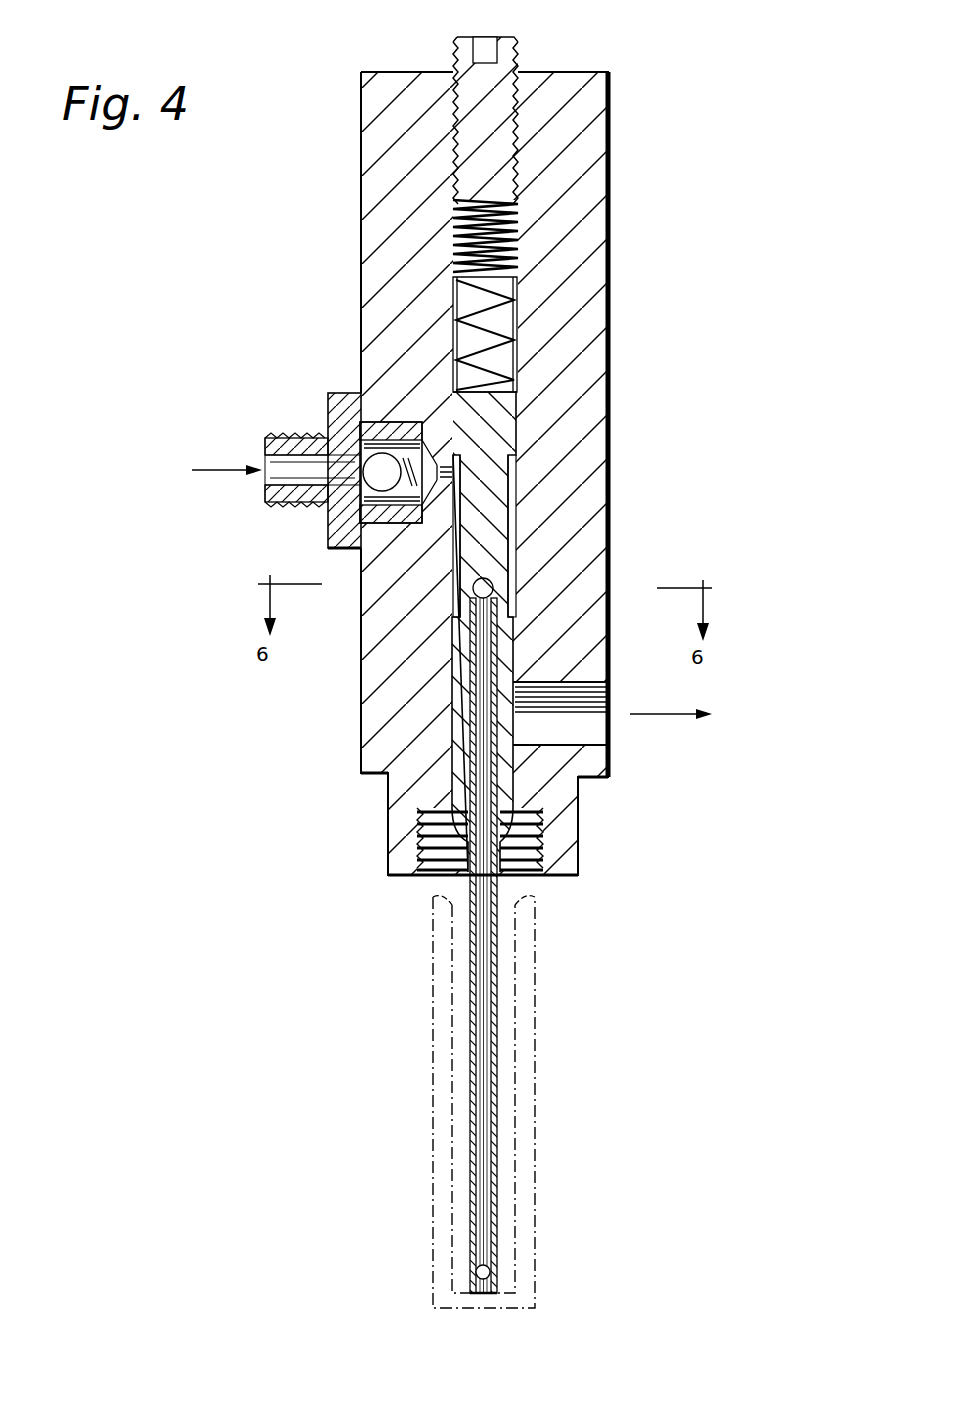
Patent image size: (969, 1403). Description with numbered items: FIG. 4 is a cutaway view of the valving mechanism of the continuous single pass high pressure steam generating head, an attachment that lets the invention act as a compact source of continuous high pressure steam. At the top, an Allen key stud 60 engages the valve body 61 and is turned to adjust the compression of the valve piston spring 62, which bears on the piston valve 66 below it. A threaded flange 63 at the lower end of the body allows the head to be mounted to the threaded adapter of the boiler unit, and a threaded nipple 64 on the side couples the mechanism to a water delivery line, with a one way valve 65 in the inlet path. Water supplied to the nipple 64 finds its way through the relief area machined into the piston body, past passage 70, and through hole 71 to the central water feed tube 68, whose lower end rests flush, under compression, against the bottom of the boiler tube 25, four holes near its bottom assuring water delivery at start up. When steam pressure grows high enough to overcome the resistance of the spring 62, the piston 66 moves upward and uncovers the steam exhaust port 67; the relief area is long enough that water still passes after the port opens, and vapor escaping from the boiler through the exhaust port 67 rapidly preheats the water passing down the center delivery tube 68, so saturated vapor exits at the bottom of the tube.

The boiler tube 25 is at (537, 1203).
The Allen key stud 60 is at (497, 42).
The valve body 61 is at (605, 150).
The valve piston spring 62 is at (500, 302).
The threaded flange 63 is at (395, 827).
The threaded nipple 64 is at (265, 441).
The one way valve 65 is at (360, 488).
The piston valve 66 is at (500, 510).
The steam exhaust port 67 is at (530, 731).
The water feed tube 68 is at (470, 1108).
The annular passage 70 is at (512, 572).
The hole 71 is at (466, 597).